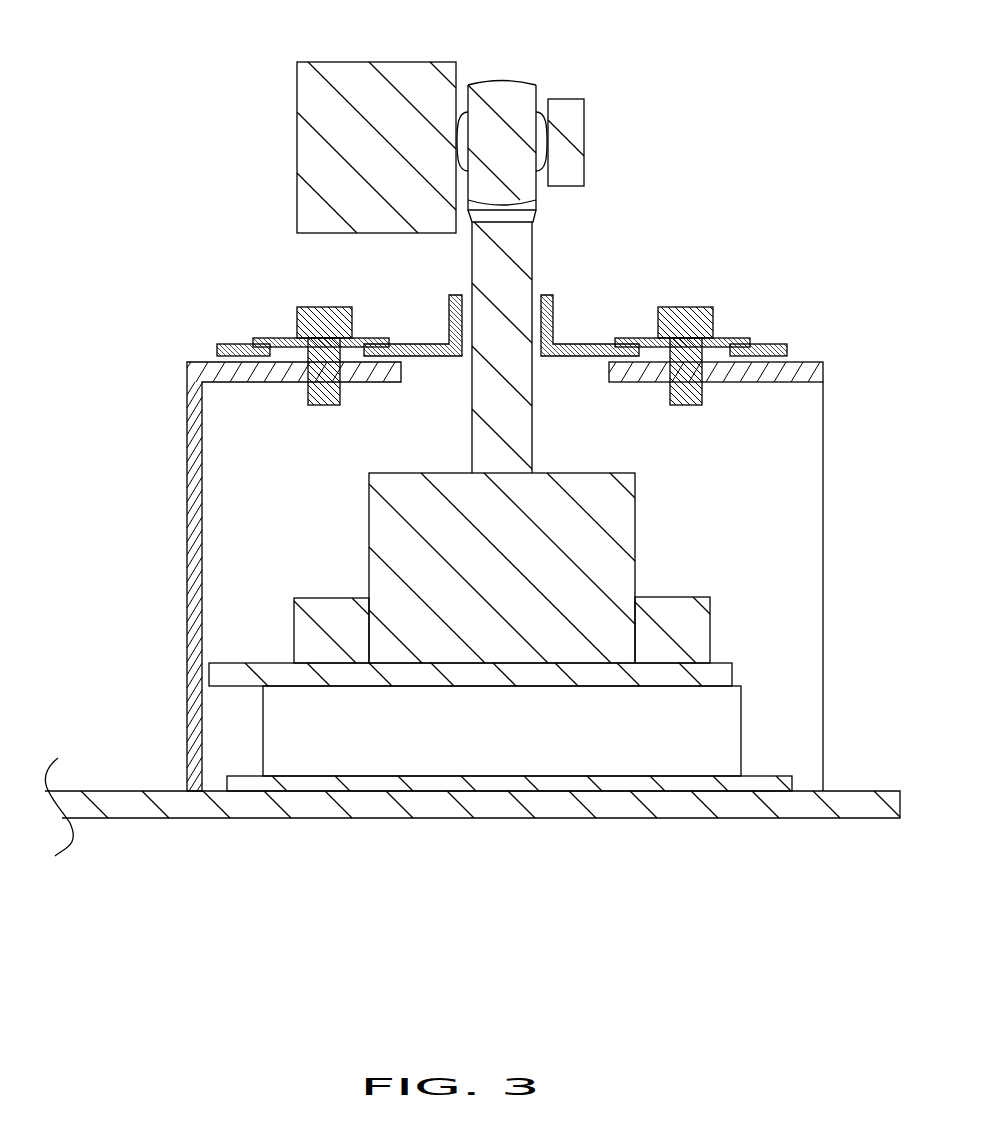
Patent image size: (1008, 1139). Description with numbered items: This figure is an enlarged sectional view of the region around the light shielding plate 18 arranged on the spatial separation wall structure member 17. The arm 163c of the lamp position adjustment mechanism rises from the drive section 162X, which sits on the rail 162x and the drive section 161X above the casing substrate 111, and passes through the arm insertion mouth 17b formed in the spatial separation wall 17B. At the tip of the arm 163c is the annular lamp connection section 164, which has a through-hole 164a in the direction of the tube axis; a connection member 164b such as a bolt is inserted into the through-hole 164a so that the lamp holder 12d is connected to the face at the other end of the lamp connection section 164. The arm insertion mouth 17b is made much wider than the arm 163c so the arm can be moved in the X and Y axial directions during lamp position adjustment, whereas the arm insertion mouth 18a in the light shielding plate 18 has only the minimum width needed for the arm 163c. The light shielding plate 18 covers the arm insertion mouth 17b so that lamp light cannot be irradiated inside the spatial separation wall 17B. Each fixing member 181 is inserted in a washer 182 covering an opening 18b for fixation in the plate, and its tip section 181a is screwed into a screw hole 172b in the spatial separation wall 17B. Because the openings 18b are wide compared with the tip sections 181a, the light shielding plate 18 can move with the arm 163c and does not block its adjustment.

The casing substrate 111 is at (135, 815).
The lamp holder 12d is at (363, 78).
The drive section 161X is at (218, 675).
The drive section 162X is at (610, 518).
The rail 162x is at (305, 640).
The arm 163c is at (522, 250).
The lamp connection section 164 is at (490, 88).
The through-hole 164a is at (532, 113).
The connection member 164b is at (567, 129).
The spatial separation wall structure member 17 is at (187, 507).
The spatial separation wall 17B is at (790, 368).
The arm insertion mouth 17b is at (590, 372).
The screw hole 172b is at (308, 380).
The light shielding plate 18 is at (420, 352).
The arm insertion mouth 18a is at (533, 348).
The opening for fixation 18b is at (352, 350).
The fixing member 181 is at (312, 322).
The tip section 181a is at (320, 397).
The washer 182 is at (250, 343).